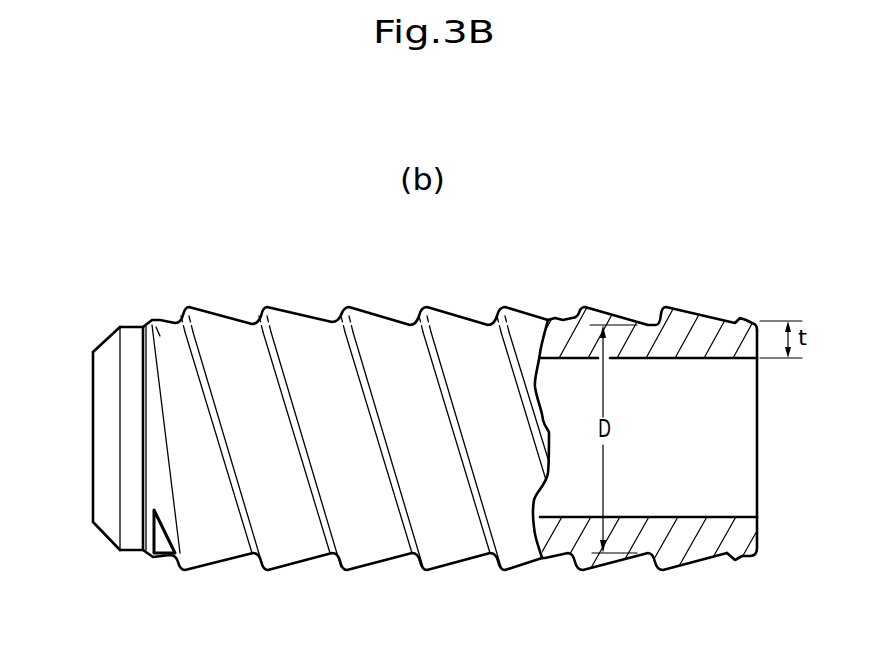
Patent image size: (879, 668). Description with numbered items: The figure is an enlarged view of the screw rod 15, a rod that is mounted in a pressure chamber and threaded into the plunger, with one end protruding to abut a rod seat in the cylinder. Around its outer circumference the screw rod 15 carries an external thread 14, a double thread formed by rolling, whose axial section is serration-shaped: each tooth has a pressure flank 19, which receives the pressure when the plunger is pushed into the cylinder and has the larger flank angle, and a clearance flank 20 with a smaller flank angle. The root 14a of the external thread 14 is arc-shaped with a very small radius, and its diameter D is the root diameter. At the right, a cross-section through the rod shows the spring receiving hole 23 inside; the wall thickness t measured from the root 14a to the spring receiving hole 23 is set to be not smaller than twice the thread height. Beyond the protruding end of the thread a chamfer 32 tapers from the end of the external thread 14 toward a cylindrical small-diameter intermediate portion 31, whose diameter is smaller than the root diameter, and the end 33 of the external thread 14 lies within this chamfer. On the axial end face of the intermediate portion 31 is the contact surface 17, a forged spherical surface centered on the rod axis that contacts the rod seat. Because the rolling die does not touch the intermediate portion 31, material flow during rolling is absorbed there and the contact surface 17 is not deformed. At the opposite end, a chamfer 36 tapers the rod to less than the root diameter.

The external thread 14 is at (442, 310).
The root of the external thread 14a is at (648, 323).
The screw rod 15 is at (92, 410).
The contact surface 17 is at (100, 346).
The pressure flank 19 is at (467, 562).
The clearance flank 20 is at (417, 562).
The spring receiving hole 23 is at (690, 517).
The intermediate portion 31 is at (128, 335).
The chamfer 32 is at (147, 328).
The end of the external thread 33 is at (163, 550).
The chamfer 36 is at (743, 560).